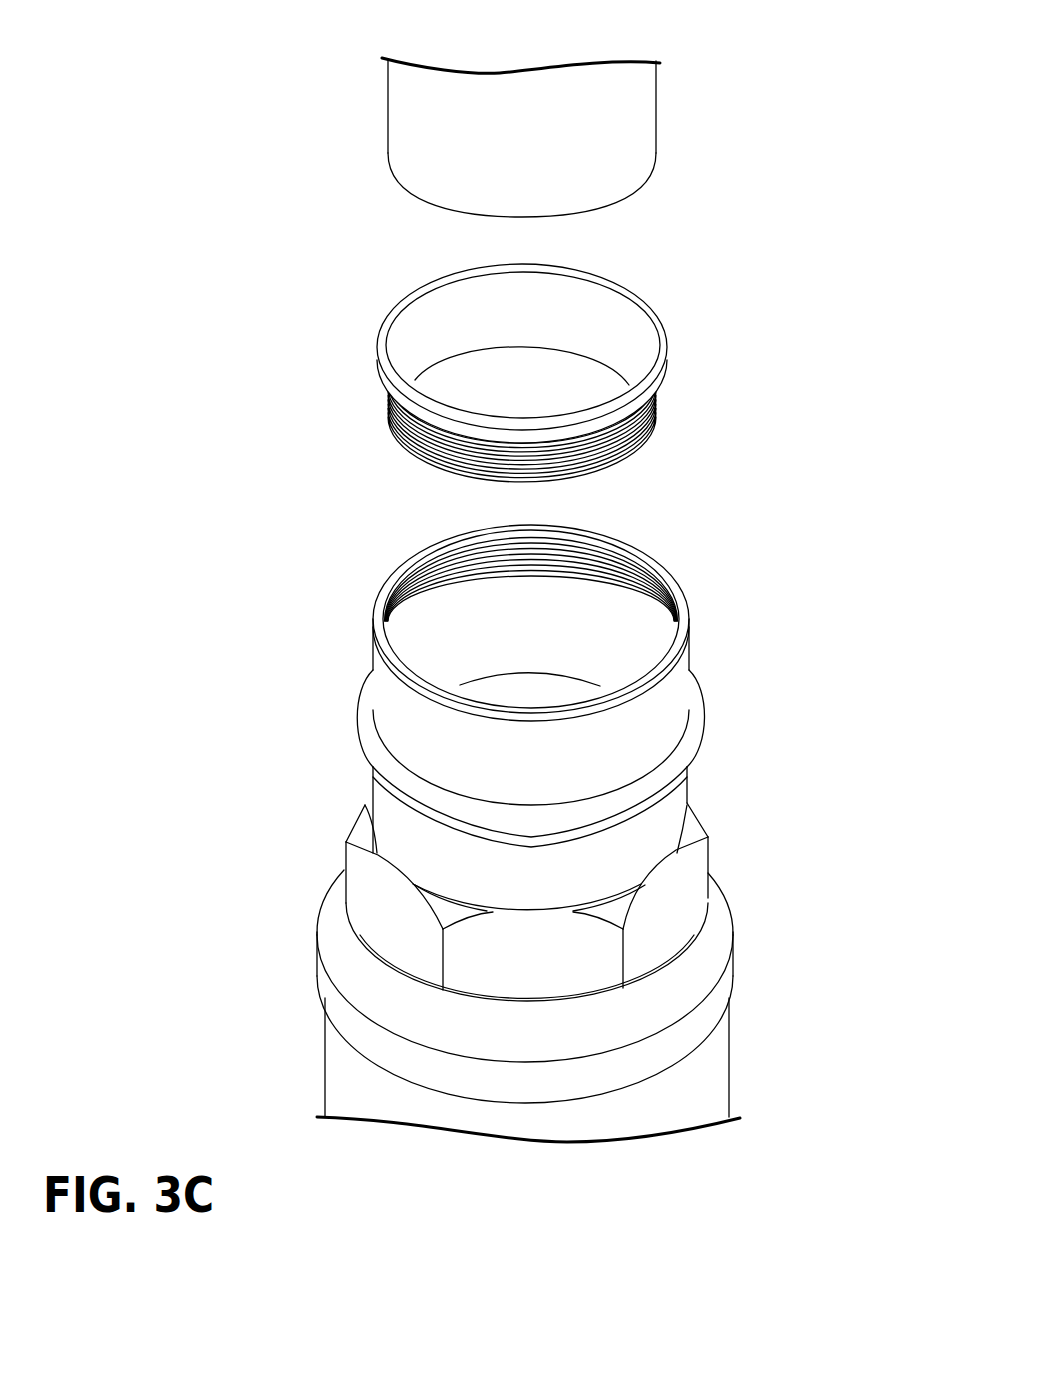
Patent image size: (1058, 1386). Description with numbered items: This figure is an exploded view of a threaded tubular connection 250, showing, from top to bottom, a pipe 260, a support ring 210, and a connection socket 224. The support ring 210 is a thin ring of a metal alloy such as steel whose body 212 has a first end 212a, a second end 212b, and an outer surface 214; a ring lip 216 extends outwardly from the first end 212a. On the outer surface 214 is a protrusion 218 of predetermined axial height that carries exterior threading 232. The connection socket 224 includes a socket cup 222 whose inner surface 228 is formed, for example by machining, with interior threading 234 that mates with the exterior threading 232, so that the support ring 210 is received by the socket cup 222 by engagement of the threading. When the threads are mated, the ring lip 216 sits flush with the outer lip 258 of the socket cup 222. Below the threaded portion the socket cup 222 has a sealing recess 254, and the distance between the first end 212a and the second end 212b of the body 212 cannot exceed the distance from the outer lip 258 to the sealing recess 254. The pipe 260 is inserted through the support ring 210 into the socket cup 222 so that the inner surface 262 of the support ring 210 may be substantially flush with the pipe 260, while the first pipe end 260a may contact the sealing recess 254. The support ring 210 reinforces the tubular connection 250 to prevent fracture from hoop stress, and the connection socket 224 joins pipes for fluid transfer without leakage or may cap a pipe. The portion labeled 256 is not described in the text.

The support ring 210 is at (522, 350).
The body 212 is at (522, 418).
The first end 212a is at (387, 385).
The second end 212b is at (412, 447).
The outer surface 214 is at (623, 415).
The ring lip 216 is at (668, 358).
The protrusion 218 is at (590, 460).
The socket cup 222 is at (518, 667).
The connection socket 224 is at (350, 801).
The inner surface 228 is at (630, 645).
The exterior threading 232 is at (642, 437).
The interior threading 234 is at (613, 578).
The tubular connection 250 is at (795, 884).
The sealing recess 254 is at (680, 751).
The rim 256 is at (660, 710).
The outer lip 258 is at (672, 590).
The pipe 260 is at (521, 137).
The first pipe end 260a is at (420, 193).
The inner surface 262 is at (427, 327).